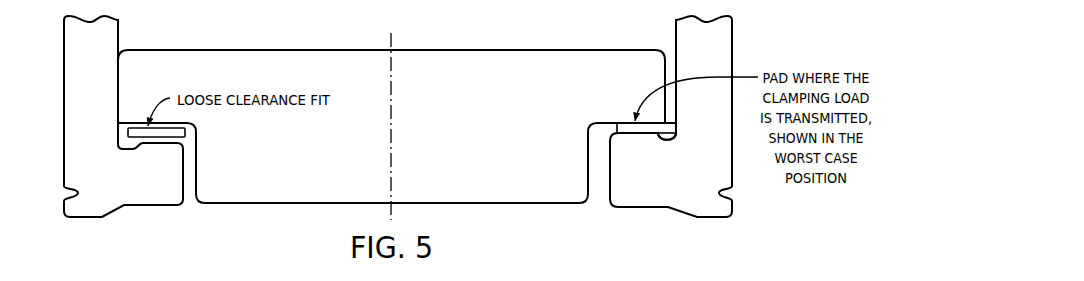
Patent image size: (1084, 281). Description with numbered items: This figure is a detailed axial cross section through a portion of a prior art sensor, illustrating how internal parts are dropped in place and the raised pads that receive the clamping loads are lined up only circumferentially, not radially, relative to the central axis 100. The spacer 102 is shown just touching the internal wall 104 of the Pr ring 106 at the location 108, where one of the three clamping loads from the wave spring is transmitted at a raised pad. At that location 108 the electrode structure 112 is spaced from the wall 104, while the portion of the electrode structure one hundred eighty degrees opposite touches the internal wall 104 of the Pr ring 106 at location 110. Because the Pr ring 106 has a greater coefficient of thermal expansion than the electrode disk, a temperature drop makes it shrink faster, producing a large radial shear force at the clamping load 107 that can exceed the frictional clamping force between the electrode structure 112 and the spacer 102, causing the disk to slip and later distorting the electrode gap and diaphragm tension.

The central axis 100 is at (392, 173).
The spacer 102 is at (613, 131).
The internal wall 104 is at (675, 29).
The Pr ring 106 is at (62, 125).
The clamping load 107 is at (648, 121).
The location 108 is at (683, 130).
The location 110 is at (121, 83).
The electrode structure 112 is at (489, 155).